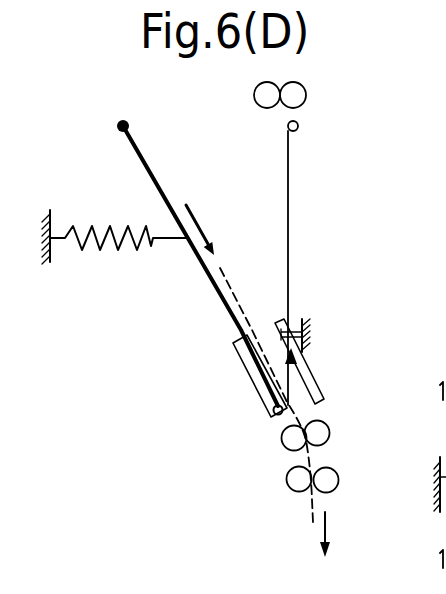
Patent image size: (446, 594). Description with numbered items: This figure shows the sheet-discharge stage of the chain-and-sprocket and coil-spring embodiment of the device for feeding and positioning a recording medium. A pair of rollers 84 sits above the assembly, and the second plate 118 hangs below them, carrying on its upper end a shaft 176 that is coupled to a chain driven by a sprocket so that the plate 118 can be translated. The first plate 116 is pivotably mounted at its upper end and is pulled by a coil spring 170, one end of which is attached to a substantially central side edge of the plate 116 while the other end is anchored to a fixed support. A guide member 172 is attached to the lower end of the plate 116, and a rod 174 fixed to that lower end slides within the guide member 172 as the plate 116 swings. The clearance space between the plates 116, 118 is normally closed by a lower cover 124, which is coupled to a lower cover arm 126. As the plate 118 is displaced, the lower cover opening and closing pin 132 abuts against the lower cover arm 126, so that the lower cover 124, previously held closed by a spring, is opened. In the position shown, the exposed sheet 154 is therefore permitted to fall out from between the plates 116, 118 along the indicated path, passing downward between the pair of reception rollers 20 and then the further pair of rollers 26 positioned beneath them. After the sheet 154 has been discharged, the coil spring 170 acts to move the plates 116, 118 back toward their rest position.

The rollers 84 is at (306, 99).
The shaft 176 is at (297, 131).
The second plate 118 is at (288, 197).
The coil spring 170 is at (96, 228).
The first plate 116 is at (224, 280).
The sheet 154 is at (228, 287).
The guide member 172 is at (242, 366).
The rod 174 is at (262, 399).
The lower cover opening and closing pin 132 is at (293, 328).
The lower cover arm 126 is at (317, 388).
The lower cover 124 is at (321, 413).
The reception rollers 20 is at (331, 446).
The rollers 26 is at (336, 487).